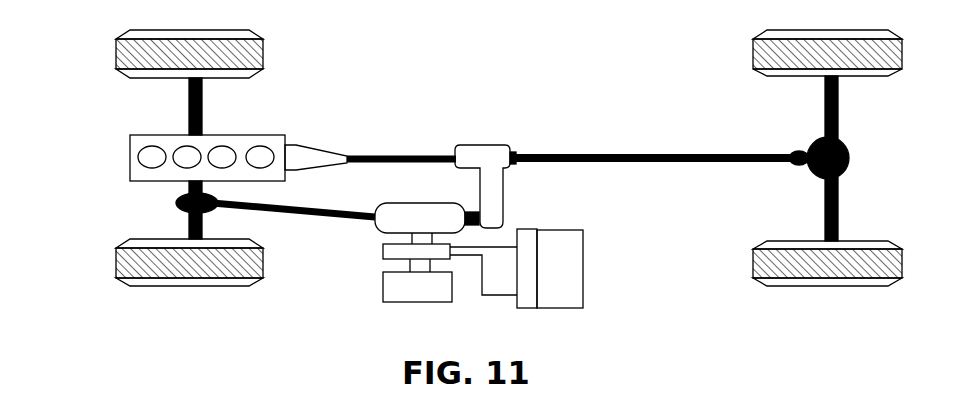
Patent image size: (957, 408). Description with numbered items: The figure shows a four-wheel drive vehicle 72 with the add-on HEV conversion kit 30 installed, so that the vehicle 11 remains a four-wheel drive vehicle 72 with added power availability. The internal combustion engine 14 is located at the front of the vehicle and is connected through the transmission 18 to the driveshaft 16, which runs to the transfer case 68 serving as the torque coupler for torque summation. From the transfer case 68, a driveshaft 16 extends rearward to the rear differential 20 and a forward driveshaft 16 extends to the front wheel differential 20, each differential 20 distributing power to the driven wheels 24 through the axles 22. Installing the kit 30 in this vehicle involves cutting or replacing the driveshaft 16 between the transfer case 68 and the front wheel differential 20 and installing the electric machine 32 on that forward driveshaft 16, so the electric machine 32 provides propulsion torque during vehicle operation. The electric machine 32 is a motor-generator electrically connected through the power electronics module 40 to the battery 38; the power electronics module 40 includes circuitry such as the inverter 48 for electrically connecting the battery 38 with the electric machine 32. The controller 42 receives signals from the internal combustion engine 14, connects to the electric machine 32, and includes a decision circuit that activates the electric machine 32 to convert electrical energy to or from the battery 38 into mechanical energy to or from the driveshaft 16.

The vehicle 11 is at (428, 112).
The internal combustion engine 14 is at (237, 136).
The driveshaft 16 is at (370, 154).
The transmission 18 is at (310, 146).
The differential 20 is at (180, 203).
The axles 22 is at (188, 116).
The driven wheels 24 is at (120, 72).
The HEV conversion kit 30 is at (352, 297).
The electric machine 32 is at (398, 204).
The battery 38 is at (575, 235).
The power electronics module 40 is at (522, 238).
The controller 42 is at (305, 305).
The inverter 48 is at (385, 250).
The transfer case 68 is at (502, 148).
The four-wheel drive vehicle 72 is at (517, 112).